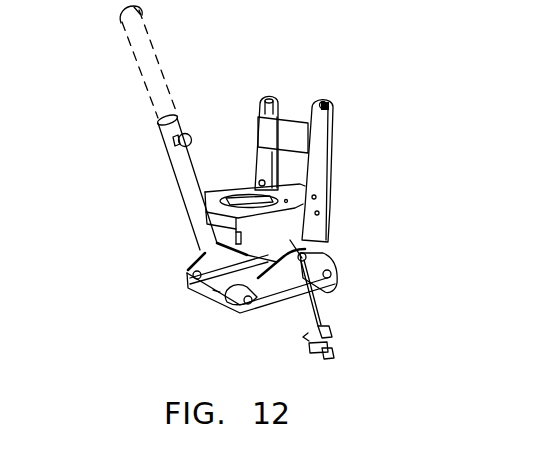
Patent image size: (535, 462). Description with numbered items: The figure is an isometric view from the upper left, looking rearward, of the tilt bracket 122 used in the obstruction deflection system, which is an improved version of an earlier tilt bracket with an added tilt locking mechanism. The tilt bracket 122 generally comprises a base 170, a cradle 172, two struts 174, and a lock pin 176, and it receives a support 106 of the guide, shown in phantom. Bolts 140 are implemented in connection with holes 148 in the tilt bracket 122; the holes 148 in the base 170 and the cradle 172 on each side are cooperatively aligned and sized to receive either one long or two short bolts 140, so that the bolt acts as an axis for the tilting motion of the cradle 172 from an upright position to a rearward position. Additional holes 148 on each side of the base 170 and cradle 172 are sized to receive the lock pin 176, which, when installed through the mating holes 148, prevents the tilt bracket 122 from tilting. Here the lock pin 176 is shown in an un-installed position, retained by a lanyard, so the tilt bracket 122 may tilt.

The support 106 is at (153, 33).
The tilt bracket 122 is at (305, 83).
The strut 174 is at (270, 157).
The cradle 172 is at (284, 217).
The hole 148 is at (296, 245).
The bolt 140 is at (328, 258).
The base 170 is at (320, 291).
The lock pin 176 is at (300, 337).